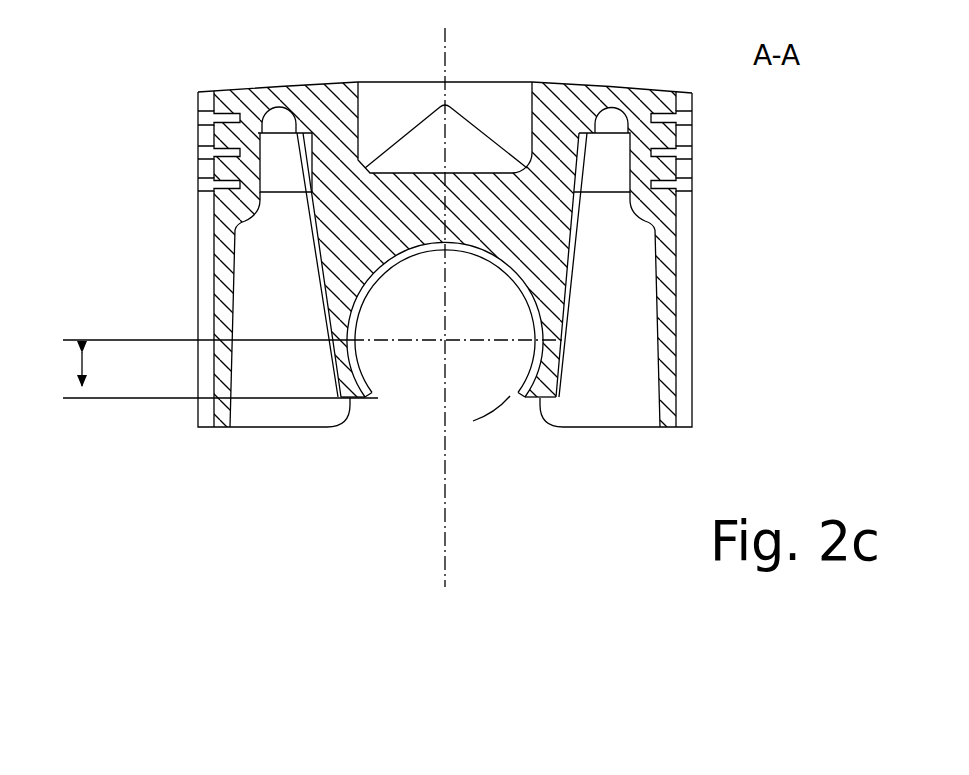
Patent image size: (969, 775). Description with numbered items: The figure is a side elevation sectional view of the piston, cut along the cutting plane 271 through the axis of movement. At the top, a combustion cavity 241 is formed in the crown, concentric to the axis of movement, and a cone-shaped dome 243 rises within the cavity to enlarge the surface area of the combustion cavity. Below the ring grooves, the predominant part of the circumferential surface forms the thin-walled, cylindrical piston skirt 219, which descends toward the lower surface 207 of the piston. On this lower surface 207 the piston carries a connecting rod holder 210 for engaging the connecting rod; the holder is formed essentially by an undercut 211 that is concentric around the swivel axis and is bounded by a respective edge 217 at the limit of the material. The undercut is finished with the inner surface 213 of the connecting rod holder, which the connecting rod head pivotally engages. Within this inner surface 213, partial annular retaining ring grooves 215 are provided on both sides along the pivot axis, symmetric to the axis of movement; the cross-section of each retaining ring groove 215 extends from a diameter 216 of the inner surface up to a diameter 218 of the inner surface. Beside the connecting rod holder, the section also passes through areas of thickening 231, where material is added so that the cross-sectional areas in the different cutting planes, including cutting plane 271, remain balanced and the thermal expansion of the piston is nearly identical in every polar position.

The lower surface 207 is at (277, 440).
The connecting rod holder 210 is at (355, 403).
The undercut 211 is at (446, 440).
The inner surface 213 is at (362, 355).
The annular retaining ring groove 215 is at (527, 378).
The diameter 216 is at (495, 425).
The edge 217 is at (378, 400).
The diameter 218 is at (520, 417).
The piston skirt 219 is at (693, 405).
The thickening 231 is at (607, 123).
The combustion cavity 241 is at (395, 93).
The cone-shaped dome 243 is at (458, 128).
The cutting plane 271 is at (452, 774).